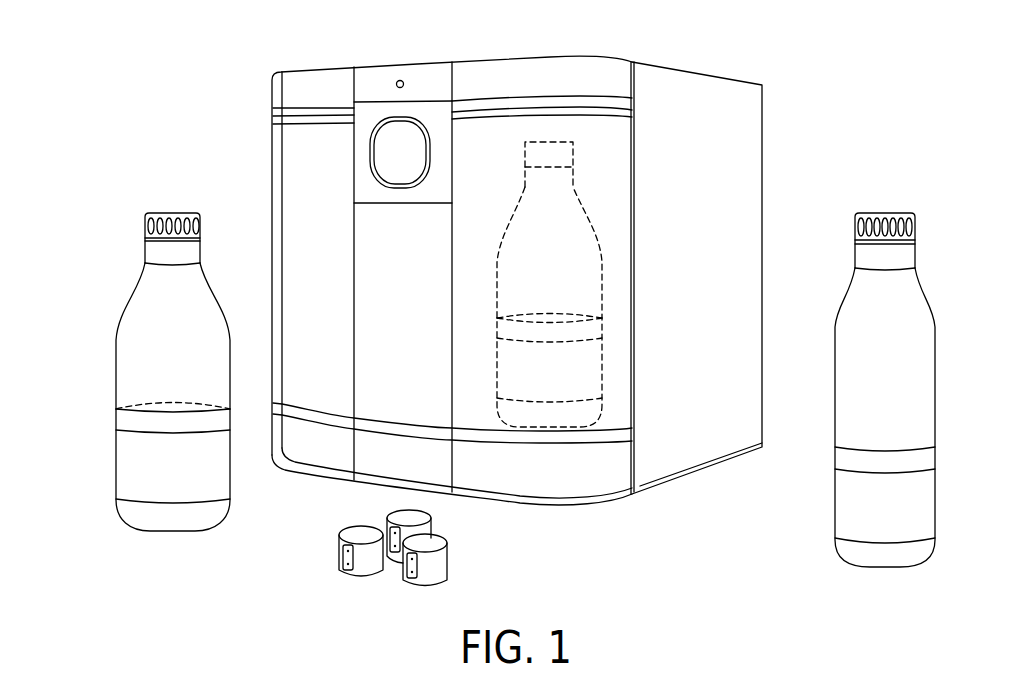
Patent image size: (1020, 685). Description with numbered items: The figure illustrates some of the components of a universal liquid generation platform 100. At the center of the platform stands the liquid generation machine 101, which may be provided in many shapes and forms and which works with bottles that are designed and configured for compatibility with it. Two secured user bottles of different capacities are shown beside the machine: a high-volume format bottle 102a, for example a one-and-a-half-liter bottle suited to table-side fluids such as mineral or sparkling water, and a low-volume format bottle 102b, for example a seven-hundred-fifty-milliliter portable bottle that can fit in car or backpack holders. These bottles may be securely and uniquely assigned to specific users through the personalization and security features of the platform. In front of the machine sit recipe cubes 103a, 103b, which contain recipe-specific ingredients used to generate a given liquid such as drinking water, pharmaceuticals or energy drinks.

The liquid generation platform 100 is at (738, 46).
The liquid generation machine 101 is at (278, 92).
The high-volume format bottle 102a is at (127, 336).
The low-volume format bottle 102b is at (848, 495).
The recipe cube 103a is at (338, 557).
The recipe cube 103b is at (403, 575).